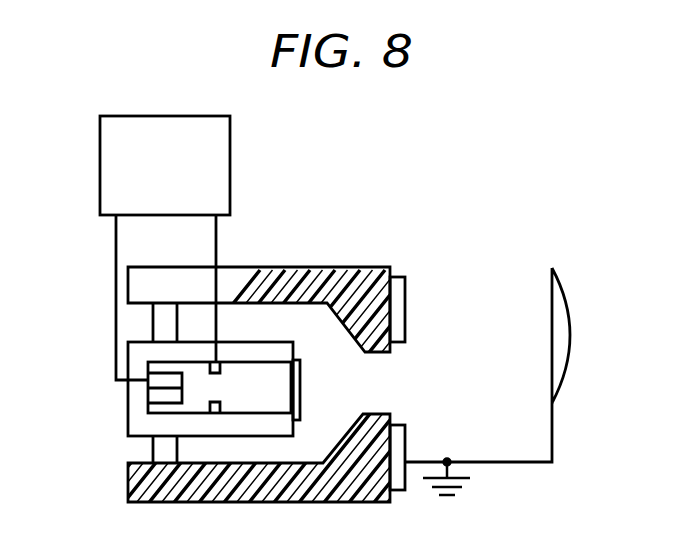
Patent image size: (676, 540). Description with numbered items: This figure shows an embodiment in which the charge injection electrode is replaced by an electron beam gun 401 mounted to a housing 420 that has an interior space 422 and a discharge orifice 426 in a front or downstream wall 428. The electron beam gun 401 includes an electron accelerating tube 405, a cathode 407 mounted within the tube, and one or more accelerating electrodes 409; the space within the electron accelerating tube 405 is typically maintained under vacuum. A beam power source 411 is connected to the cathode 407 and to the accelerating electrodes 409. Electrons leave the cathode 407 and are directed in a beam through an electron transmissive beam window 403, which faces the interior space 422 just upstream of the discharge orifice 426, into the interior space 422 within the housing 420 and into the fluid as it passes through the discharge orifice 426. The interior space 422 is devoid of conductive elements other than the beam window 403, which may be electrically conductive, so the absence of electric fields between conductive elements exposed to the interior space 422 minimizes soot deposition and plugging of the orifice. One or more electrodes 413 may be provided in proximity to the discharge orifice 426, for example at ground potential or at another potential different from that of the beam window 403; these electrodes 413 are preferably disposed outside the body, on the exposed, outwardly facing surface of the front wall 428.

The electron beam gun 401 is at (248, 330).
The electron transmissive beam window 403 is at (390, 313).
The electron accelerating tube 405 is at (140, 340).
The cathode 407 is at (148, 393).
The accelerating electrodes 409 is at (210, 374).
The beam power source 411 is at (100, 155).
The electrodes 413 is at (406, 442).
The housing 420 is at (300, 236).
The interior space 422 is at (316, 318).
The discharge orifice 426 is at (380, 380).
The front wall 428 is at (390, 417).